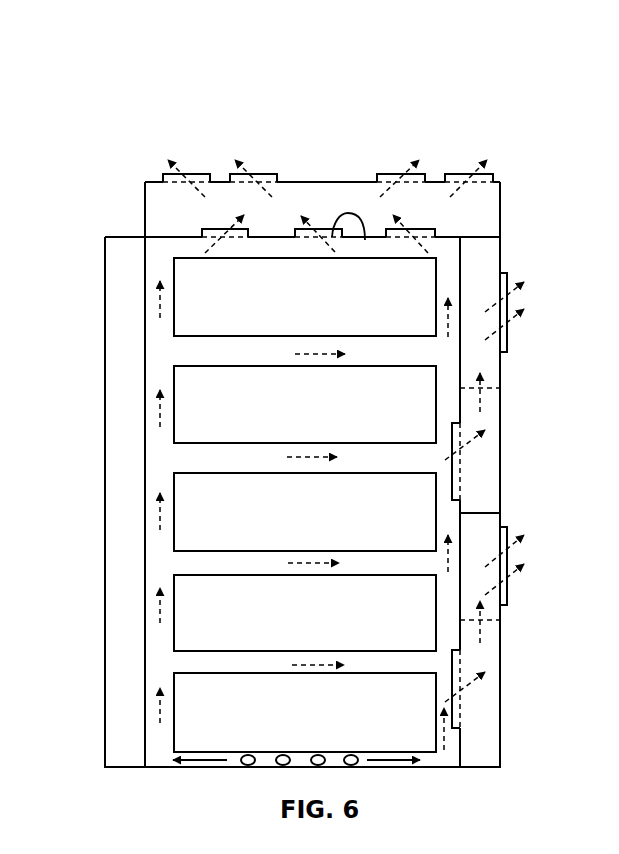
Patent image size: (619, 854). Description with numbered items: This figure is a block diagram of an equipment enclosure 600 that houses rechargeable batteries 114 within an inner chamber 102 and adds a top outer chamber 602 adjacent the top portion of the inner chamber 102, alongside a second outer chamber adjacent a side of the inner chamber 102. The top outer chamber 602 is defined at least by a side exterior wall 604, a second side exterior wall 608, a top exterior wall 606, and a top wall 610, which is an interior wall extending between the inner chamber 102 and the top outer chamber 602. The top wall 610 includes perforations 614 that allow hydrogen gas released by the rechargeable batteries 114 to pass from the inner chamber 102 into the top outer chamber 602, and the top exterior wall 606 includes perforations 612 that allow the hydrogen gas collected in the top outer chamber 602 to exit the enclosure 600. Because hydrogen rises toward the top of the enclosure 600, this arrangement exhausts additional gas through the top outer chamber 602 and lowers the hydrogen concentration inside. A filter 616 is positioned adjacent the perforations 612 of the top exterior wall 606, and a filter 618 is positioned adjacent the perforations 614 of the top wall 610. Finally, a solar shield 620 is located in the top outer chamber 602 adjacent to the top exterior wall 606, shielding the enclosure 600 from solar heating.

The equipment enclosure 600 is at (492, 55).
The inner chamber 102 is at (153, 359).
The rechargeable batteries 114 is at (326, 417).
The top outer chamber 602 is at (332, 197).
The side exterior wall 604 is at (145, 215).
The top exterior wall 606 is at (288, 182).
The side exterior wall 608 is at (500, 207).
The top wall 610 is at (160, 238).
The perforations 612 is at (163, 182).
The perforations 614 is at (320, 237).
The filter 616 is at (265, 175).
The filter 618 is at (365, 240).
The solar shield 620 is at (156, 181).